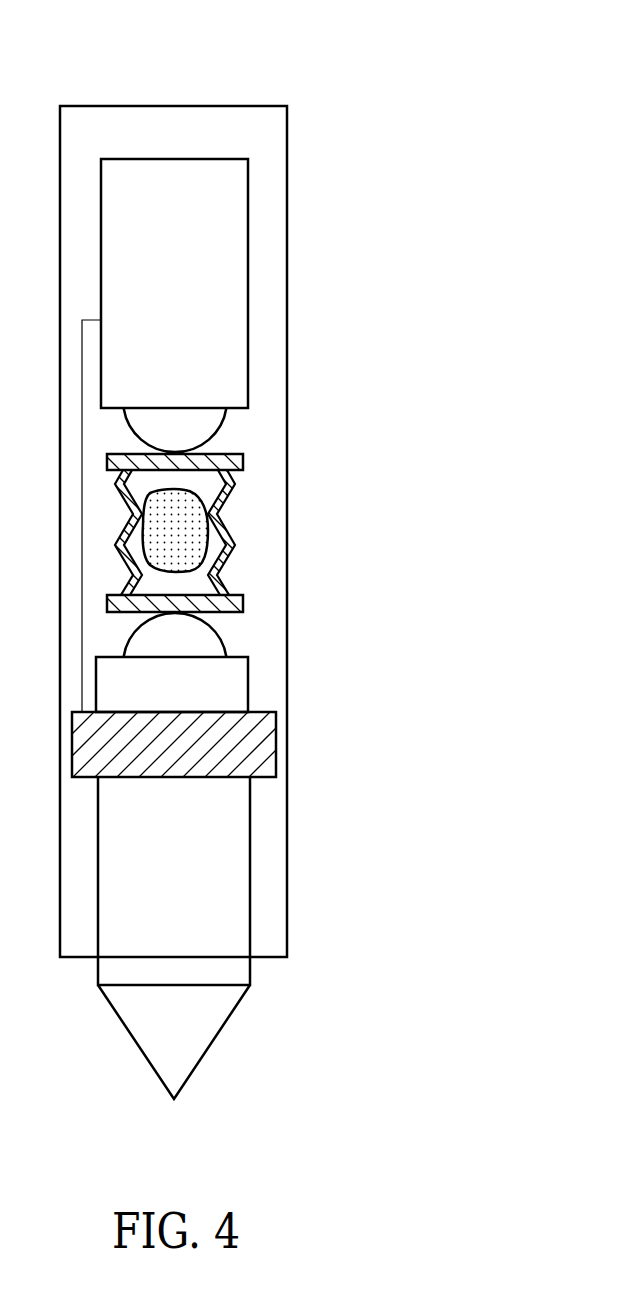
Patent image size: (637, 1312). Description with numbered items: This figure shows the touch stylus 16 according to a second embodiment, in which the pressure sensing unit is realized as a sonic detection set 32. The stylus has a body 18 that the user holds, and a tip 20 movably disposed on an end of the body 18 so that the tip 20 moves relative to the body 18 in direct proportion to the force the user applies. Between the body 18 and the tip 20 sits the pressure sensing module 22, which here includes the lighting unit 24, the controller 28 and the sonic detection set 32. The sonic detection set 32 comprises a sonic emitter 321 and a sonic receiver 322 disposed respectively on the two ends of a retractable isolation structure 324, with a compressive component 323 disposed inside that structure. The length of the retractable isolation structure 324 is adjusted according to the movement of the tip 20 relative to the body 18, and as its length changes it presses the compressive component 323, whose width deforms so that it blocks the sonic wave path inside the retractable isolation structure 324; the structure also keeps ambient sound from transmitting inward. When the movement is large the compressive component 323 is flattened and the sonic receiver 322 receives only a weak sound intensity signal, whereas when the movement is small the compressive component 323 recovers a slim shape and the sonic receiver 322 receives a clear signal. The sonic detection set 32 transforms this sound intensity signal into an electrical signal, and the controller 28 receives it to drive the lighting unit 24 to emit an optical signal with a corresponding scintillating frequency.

The touch stylus 16 is at (395, 66).
The body 18 is at (277, 183).
The tip 20 is at (208, 1018).
The pressure sensing module 22 is at (420, 311).
The lighting unit 24 is at (254, 738).
The controller 28 is at (231, 338).
The sonic detection set 32 is at (348, 399).
The sonic emitter 321 is at (198, 429).
The sonic receiver 322 is at (200, 637).
The compressive component 323 is at (187, 538).
The retractable isolation structure 324 is at (222, 495).